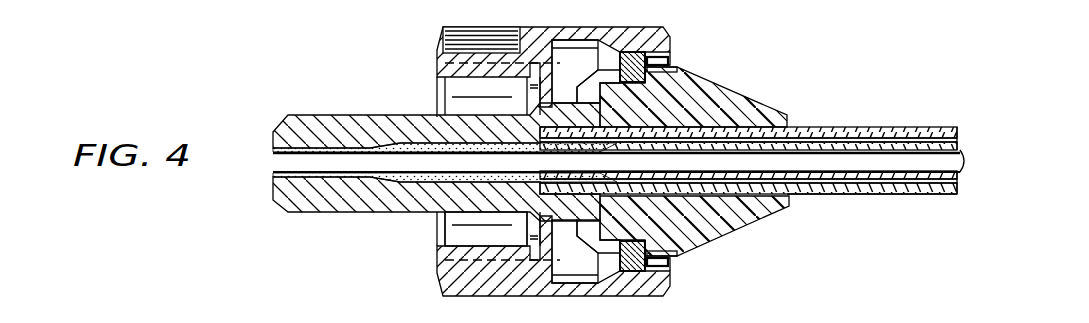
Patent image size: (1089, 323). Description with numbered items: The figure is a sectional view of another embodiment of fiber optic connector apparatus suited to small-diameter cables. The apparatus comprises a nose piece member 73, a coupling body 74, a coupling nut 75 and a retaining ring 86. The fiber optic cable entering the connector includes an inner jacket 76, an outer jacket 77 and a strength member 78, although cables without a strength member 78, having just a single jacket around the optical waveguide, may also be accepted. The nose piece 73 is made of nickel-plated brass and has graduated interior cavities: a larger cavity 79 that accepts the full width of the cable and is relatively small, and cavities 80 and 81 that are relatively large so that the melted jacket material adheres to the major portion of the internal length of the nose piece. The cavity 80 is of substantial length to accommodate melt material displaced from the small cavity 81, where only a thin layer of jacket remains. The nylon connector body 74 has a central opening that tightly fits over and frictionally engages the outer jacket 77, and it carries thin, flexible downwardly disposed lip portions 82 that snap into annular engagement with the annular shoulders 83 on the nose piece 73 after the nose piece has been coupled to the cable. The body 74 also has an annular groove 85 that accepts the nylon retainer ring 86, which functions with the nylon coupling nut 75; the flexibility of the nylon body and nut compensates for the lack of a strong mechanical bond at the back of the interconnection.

The nose piece member 73 is at (297, 213).
The coupling body 74 is at (698, 250).
The coupling nut 75 is at (571, 297).
The inner jacket 76 is at (962, 146).
The outer jacket 77 is at (807, 197).
The strength member 78 is at (963, 183).
The larger cavity 79 is at (531, 217).
The cavity 80 is at (415, 184).
The small cavity 81 is at (318, 152).
The lip portion 82 is at (576, 100).
The annular shoulders 83 is at (613, 226).
The annular groove 85 is at (677, 71).
The retaining ring 86 is at (669, 58).